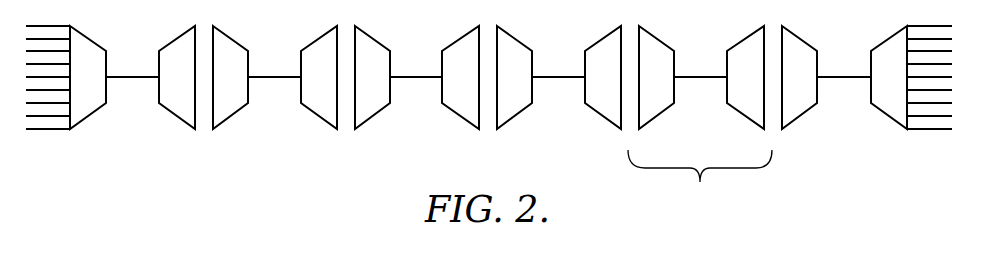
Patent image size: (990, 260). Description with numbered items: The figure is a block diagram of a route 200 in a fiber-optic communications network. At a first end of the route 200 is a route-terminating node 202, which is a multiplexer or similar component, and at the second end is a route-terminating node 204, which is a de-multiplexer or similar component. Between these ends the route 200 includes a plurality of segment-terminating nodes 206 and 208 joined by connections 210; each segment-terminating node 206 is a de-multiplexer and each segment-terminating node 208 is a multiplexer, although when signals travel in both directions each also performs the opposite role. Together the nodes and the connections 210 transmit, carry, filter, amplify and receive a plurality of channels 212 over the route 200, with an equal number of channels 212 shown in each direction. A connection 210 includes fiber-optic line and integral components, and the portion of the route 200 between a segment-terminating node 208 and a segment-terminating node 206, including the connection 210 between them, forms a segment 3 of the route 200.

The route 200 is at (301, 152).
The route-terminating node 202 is at (92, 117).
The route-terminating node 204 is at (890, 38).
The segment-terminating node 206 is at (320, 36).
The segment-terminating node 208 is at (372, 116).
The connection 210 is at (146, 76).
The channels 212 is at (55, 131).
The segment 3 is at (700, 181).